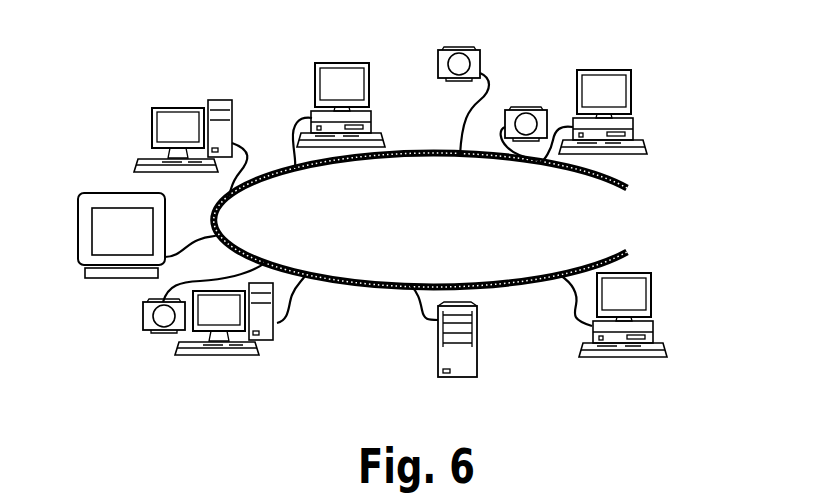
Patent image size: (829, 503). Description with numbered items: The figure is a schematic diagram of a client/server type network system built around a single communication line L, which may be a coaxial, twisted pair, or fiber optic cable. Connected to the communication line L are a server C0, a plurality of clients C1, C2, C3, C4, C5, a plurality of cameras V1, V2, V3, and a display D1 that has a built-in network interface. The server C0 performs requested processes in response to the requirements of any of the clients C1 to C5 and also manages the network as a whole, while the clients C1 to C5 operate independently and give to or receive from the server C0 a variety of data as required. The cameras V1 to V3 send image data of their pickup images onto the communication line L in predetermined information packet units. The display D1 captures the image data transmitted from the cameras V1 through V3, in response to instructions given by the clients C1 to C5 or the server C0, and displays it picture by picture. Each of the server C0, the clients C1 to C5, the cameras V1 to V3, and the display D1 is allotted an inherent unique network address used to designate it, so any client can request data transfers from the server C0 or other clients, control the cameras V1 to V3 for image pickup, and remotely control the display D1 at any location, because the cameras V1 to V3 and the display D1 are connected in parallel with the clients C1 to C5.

The communication line L is at (435, 164).
The server C0 is at (482, 338).
The client C1 is at (637, 108).
The client C2 is at (305, 104).
The client C3 is at (193, 102).
The client C4 is at (280, 347).
The client C5 is at (655, 298).
The display D1 is at (90, 193).
The camera V1 is at (523, 108).
The camera V2 is at (138, 315).
The camera V3 is at (432, 77).